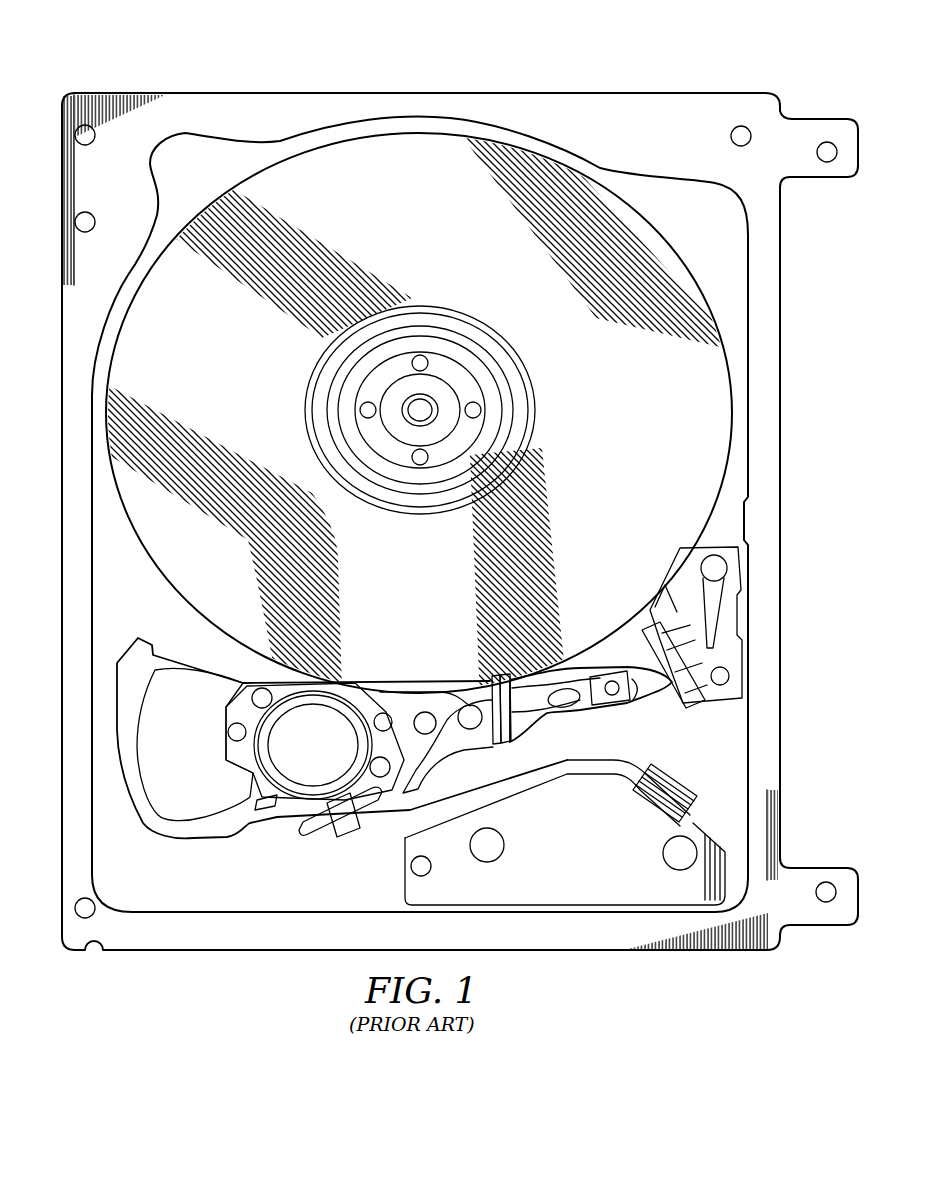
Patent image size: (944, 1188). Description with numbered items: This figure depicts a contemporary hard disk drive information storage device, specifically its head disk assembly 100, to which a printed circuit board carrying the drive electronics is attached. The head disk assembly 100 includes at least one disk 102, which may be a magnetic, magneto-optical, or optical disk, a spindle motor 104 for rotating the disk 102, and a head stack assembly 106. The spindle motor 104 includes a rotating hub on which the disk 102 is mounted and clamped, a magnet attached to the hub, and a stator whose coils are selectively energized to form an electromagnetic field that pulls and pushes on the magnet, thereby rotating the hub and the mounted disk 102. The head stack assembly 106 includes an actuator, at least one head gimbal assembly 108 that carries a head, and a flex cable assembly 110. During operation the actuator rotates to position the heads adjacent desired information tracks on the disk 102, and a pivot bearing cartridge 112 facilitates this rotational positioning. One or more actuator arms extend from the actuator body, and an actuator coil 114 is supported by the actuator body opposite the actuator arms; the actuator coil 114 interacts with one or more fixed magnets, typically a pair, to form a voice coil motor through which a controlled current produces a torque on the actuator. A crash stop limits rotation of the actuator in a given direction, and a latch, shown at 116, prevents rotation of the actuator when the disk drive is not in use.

The head disk assembly 100 is at (279, 88).
The disk 102 is at (232, 188).
The spindle motor 104 is at (457, 375).
The head stack assembly 106 is at (460, 697).
The head gimbal assembly 108 is at (647, 692).
The flex cable assembly 110 is at (607, 783).
The pivot bearing cartridge 112 is at (334, 759).
The actuator coil 114 is at (206, 830).
The latch bracket 116 is at (663, 607).